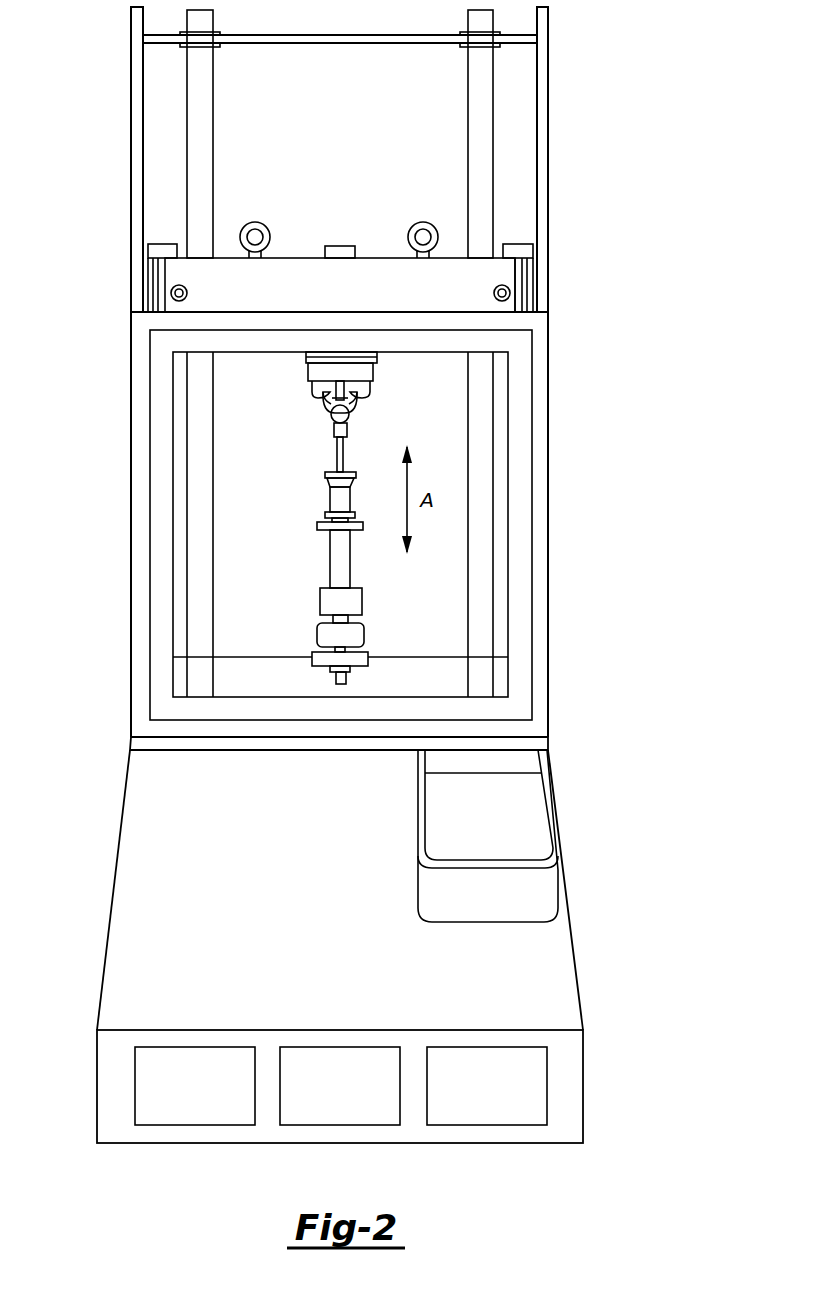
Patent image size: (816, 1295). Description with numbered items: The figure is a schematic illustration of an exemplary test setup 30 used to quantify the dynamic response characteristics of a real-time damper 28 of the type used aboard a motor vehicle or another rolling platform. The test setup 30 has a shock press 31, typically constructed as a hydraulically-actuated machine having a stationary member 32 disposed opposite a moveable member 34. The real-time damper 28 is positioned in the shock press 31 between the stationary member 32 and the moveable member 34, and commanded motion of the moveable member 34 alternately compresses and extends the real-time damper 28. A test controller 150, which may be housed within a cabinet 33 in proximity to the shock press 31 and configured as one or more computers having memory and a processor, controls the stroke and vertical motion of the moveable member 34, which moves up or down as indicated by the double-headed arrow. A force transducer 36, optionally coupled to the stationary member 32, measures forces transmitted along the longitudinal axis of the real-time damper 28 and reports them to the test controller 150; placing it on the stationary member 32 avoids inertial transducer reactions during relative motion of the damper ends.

The test setup 30 is at (662, 92).
The shock press 31 is at (132, 500).
The stationary member 32 is at (377, 353).
The force transducer 36 is at (298, 382).
The real-time damper 28 is at (296, 532).
The moveable member 34 is at (368, 665).
The cabinet 33 is at (155, 848).
The test controller 150 is at (577, 967).